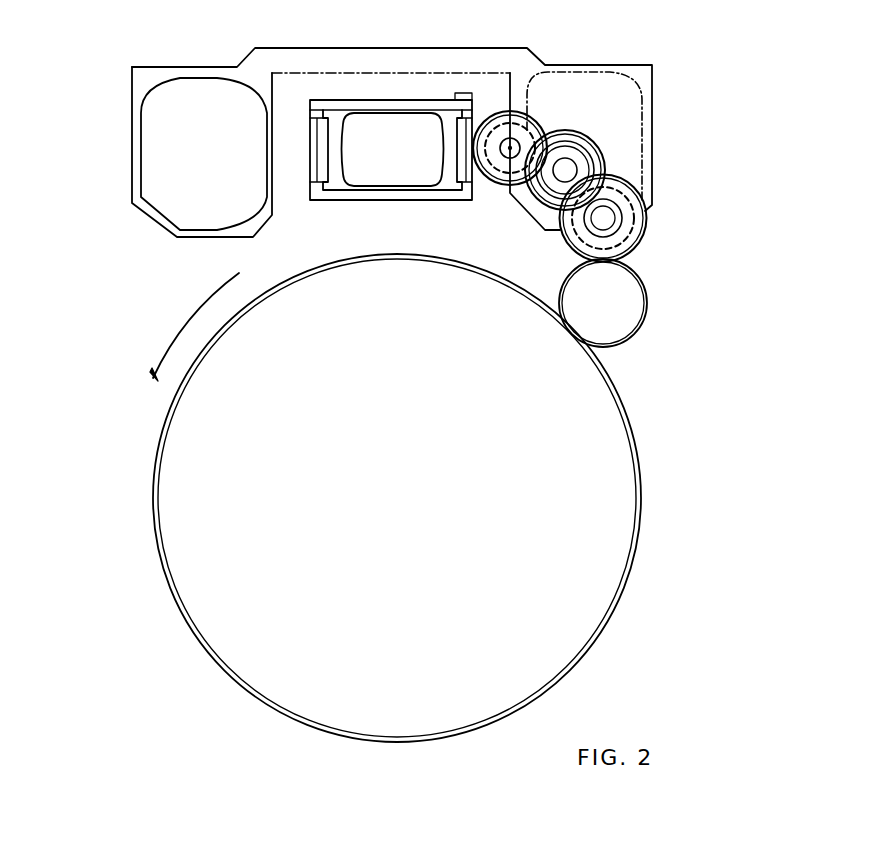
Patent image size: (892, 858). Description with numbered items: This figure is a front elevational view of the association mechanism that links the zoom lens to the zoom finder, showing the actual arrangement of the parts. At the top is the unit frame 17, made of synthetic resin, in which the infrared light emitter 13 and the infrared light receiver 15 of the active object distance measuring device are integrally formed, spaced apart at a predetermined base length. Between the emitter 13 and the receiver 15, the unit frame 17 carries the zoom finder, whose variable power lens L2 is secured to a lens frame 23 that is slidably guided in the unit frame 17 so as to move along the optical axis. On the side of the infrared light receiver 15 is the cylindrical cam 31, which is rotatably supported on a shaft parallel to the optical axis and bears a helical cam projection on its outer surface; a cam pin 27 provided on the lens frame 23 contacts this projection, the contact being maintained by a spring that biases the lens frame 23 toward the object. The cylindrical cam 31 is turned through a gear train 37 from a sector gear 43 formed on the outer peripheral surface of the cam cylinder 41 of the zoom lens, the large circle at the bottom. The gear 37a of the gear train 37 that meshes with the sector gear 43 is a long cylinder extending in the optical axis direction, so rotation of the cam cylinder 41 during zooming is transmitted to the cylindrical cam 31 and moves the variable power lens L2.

The infrared light emitter 13 is at (163, 103).
The lens frame 23 is at (318, 108).
The variable power lens L2 is at (407, 127).
The unit frame 17 is at (463, 63).
The cam pin 27 is at (485, 118).
The cylindrical cam 31 is at (550, 128).
The infrared light receiver 15 is at (620, 107).
The gear train 37 is at (662, 320).
The gear 37a is at (640, 337).
The sector gear 43 is at (639, 482).
The cam cylinder 41 is at (598, 582).